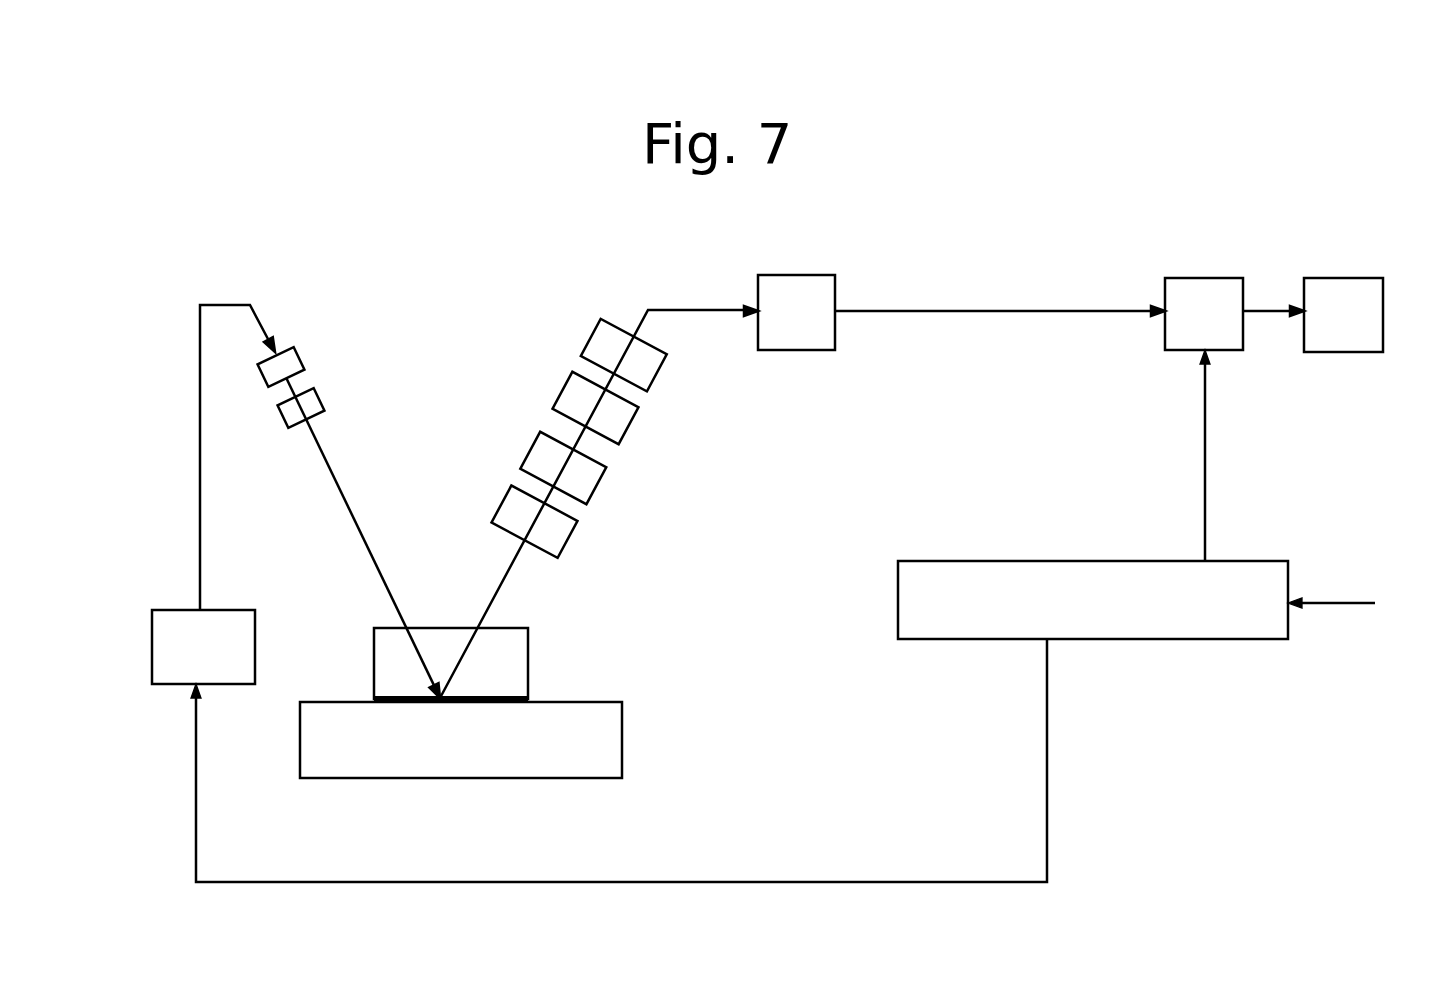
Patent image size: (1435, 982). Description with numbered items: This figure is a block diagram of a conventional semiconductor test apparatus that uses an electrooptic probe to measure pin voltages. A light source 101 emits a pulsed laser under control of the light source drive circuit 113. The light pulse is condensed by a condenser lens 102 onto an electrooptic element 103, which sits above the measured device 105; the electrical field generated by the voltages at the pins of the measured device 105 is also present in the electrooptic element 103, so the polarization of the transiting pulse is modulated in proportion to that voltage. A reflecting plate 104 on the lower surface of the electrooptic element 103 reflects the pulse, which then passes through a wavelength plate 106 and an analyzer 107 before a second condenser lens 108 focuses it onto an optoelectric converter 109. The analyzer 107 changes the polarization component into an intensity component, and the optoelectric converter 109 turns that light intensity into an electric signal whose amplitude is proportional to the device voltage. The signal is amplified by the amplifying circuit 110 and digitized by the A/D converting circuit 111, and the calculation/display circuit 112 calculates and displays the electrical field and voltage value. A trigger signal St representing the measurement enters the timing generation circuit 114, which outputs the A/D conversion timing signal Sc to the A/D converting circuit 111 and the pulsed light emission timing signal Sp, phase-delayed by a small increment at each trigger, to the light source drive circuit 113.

The light source 101 is at (285, 358).
The condenser lens 102 is at (308, 410).
The electrooptic element 103 is at (505, 663).
The reflecting plate 104 is at (413, 697).
The measured device (DUT) 105 is at (558, 760).
The wavelength plate 106 is at (515, 511).
The analyzer 107 is at (588, 481).
The condenser lens 108 is at (575, 393).
The optoelectric converter 109 is at (637, 360).
The amplifying circuit 110 is at (798, 276).
The A/D converting circuit 111 is at (1195, 283).
The calculation/display circuit 112 is at (1323, 287).
The light source drive circuit 113 is at (152, 626).
The timing generation circuit 114 is at (1047, 571).
The A/D conversion timing signal Sc is at (1205, 504).
The pulsed light emission timing signal Sp is at (1047, 770).
The trigger signal St is at (1351, 604).